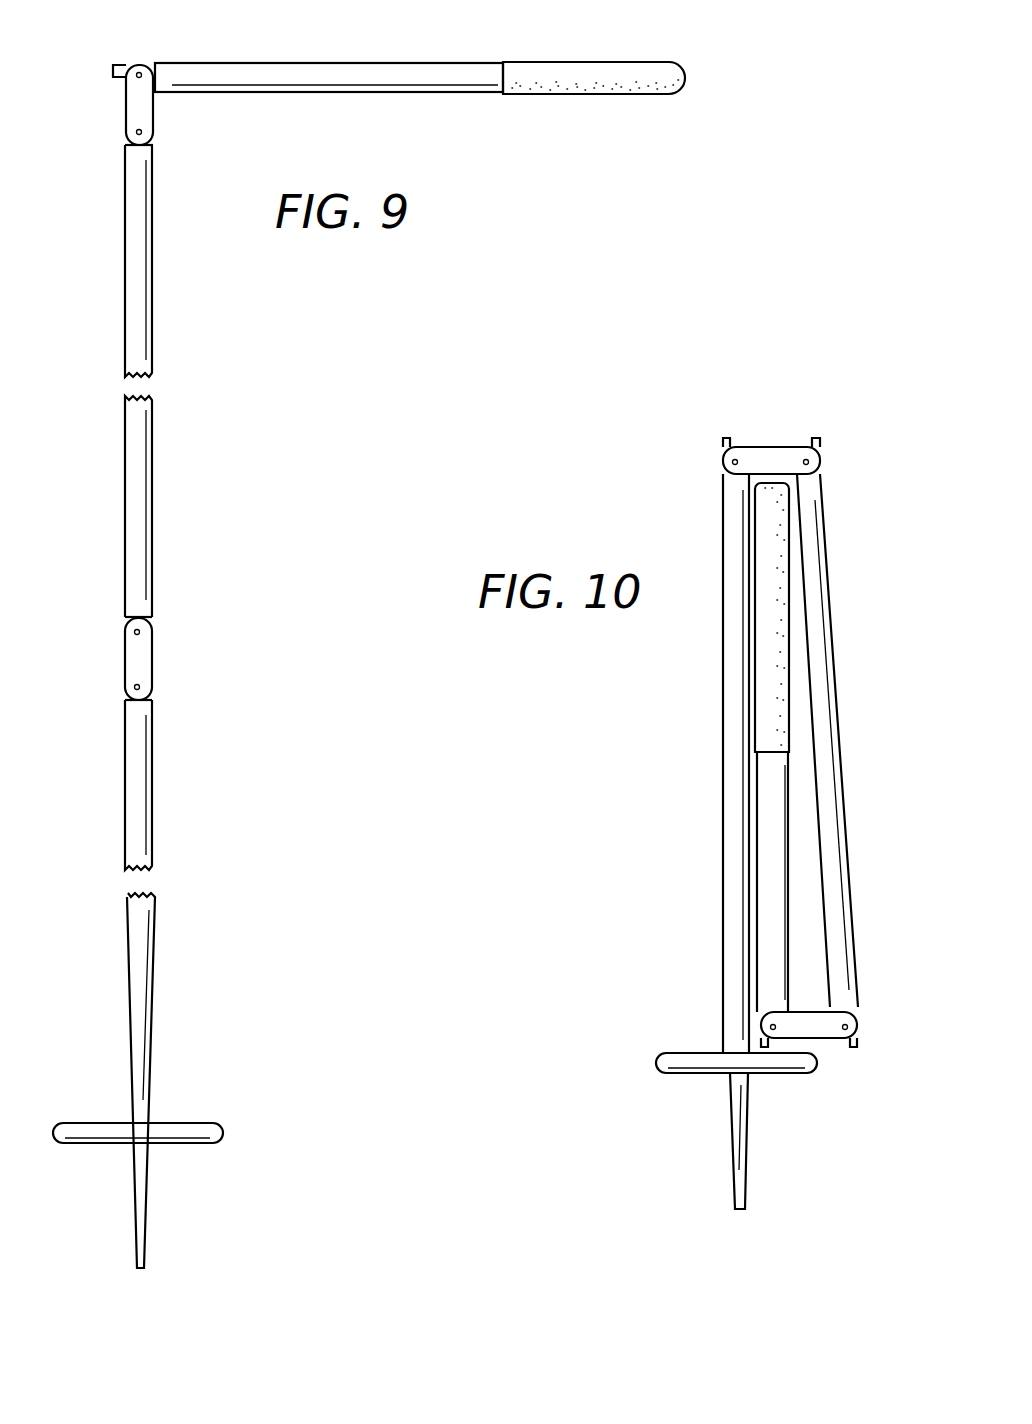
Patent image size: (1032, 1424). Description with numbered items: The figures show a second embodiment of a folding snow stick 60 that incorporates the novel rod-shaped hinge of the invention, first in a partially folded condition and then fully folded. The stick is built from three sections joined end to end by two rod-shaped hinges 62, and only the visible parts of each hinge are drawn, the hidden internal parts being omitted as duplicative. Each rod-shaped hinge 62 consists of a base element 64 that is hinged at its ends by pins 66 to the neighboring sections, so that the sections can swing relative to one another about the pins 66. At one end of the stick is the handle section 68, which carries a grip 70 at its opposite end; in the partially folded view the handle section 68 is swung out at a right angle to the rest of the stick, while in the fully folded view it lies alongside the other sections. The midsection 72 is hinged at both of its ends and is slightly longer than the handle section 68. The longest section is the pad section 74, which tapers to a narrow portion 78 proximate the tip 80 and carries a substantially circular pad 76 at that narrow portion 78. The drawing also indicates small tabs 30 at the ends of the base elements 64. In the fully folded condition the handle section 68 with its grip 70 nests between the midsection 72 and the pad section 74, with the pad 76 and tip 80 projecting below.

In FIG. 9, the tab 30 is at (112, 72).
In FIG. 10, the tab 30 is at (726, 441).
In FIG. 9, the folding snow stick 60 is at (172, 510).
In FIG. 10, the folding snow stick 60 is at (672, 790).
In FIG. 9, the rod-shaped hinge 62 is at (97, 78).
In FIG. 9, the base element 64 is at (134, 100).
In FIG. 10, the base element 64 is at (766, 465).
In FIG. 9, the pin 66 is at (142, 78).
In FIG. 10, the pin 66 is at (804, 460).
In FIG. 9, the handle section 68 is at (417, 78).
In FIG. 10, the handle section 68 is at (770, 908).
In FIG. 9, the grip 70 is at (596, 80).
In FIG. 10, the grip 70 is at (773, 638).
In FIG. 9, the midsection 72 is at (130, 315).
In FIG. 10, the midsection 72 is at (828, 752).
In FIG. 9, the pad section 74 is at (135, 822).
In FIG. 10, the pad section 74 is at (737, 823).
In FIG. 9, the pad 76 is at (212, 1130).
In FIG. 10, the pad 76 is at (705, 1063).
In FIG. 9, the narrow portion 78 is at (138, 1033).
In FIG. 10, the narrow portion 78 is at (737, 978).
In FIG. 9, the tip 80 is at (145, 1268).
In FIG. 10, the tip 80 is at (745, 1205).